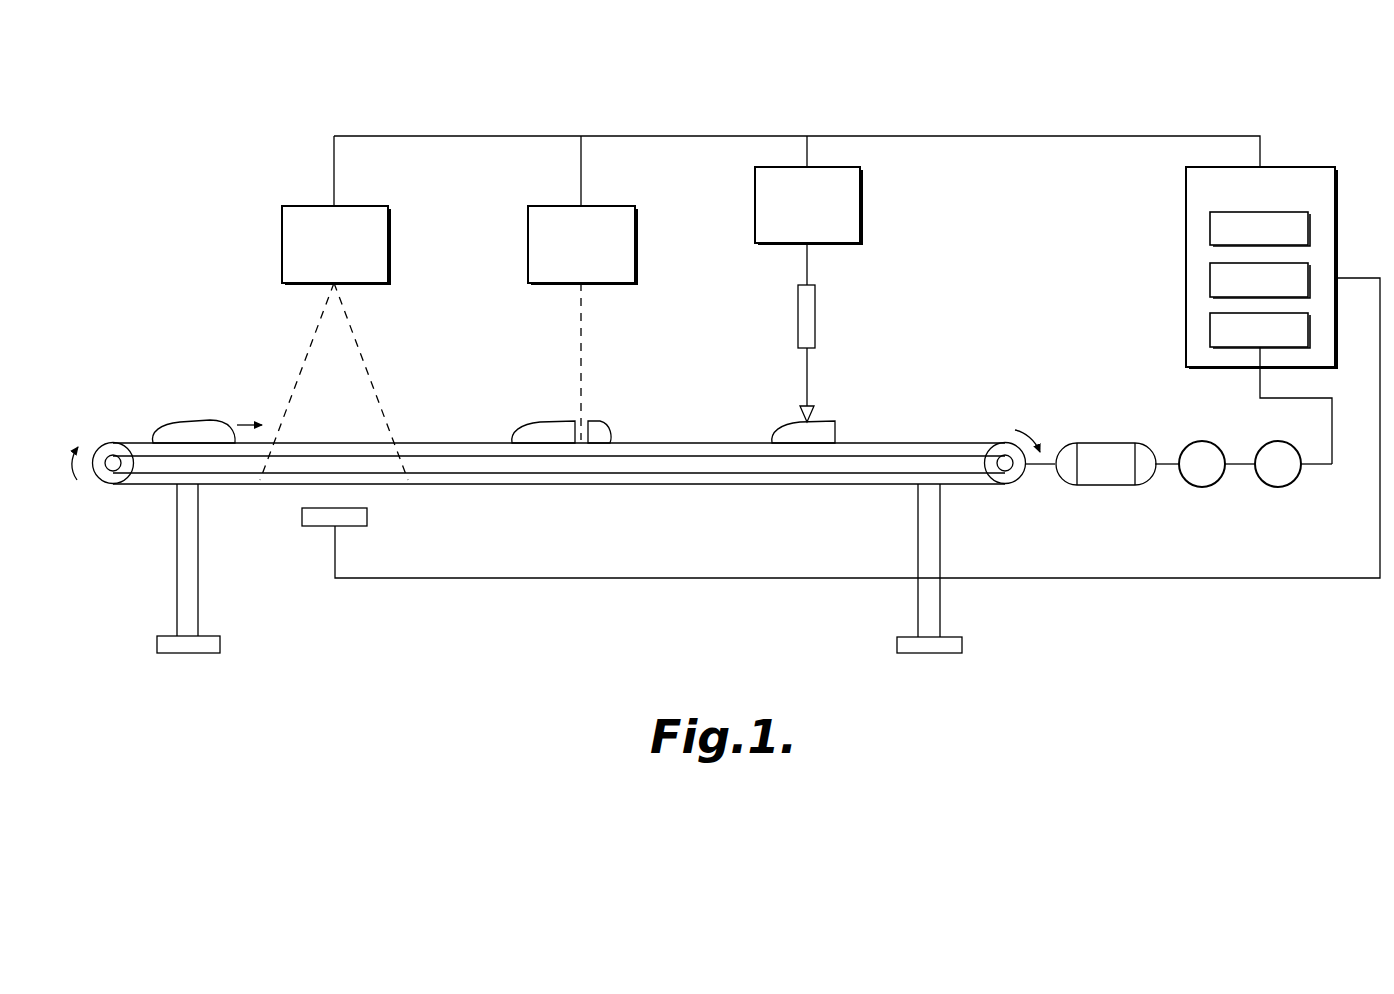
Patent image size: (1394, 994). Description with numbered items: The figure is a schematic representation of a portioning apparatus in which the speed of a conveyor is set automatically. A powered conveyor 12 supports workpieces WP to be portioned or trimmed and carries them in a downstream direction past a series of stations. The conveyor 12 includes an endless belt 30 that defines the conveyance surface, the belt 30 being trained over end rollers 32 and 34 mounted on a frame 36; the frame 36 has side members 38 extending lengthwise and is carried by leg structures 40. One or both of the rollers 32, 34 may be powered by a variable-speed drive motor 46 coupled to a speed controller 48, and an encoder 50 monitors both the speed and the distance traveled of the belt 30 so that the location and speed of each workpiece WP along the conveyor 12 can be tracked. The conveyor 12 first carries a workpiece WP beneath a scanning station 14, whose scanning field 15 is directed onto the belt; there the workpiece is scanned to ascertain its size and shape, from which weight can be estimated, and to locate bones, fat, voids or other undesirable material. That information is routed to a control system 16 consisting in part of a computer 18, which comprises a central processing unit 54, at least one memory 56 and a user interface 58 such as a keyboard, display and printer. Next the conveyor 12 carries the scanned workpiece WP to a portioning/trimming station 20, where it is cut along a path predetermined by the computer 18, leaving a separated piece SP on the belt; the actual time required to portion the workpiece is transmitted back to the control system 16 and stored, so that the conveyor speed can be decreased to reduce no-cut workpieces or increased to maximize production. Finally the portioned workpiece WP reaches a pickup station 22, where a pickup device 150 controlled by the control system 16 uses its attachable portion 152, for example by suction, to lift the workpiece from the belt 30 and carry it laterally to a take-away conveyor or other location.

The powered conveyor 12 is at (253, 360).
The scanning station 14 is at (282, 228).
The scanning field 15 is at (370, 358).
The control system 16 is at (1313, 148).
The computer 18 is at (1186, 183).
The portioning/trimming station 20 is at (528, 228).
The pickup station 22 is at (860, 188).
The endless belt 30 is at (130, 440).
The roller 32 is at (103, 482).
The roller 34 is at (1013, 484).
The frame 36 is at (288, 578).
The side members 38 is at (457, 463).
The leg structures 40 is at (177, 584).
The variable-speed drive motor 46 is at (1125, 486).
The speed controller 48 is at (1295, 485).
The encoder 50 is at (1208, 487).
The central processing unit 54 is at (1210, 228).
The memory 56 is at (1210, 280).
The user interface 58 is at (1210, 330).
The pickup device 150 is at (815, 315).
The attachable portion 152 is at (800, 410).
The workpiece WP is at (200, 420).
The scrap piece SP is at (600, 432).